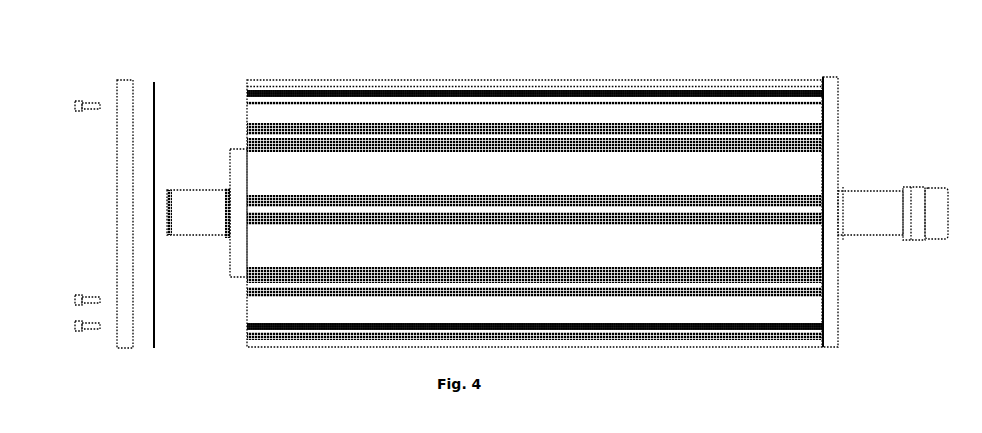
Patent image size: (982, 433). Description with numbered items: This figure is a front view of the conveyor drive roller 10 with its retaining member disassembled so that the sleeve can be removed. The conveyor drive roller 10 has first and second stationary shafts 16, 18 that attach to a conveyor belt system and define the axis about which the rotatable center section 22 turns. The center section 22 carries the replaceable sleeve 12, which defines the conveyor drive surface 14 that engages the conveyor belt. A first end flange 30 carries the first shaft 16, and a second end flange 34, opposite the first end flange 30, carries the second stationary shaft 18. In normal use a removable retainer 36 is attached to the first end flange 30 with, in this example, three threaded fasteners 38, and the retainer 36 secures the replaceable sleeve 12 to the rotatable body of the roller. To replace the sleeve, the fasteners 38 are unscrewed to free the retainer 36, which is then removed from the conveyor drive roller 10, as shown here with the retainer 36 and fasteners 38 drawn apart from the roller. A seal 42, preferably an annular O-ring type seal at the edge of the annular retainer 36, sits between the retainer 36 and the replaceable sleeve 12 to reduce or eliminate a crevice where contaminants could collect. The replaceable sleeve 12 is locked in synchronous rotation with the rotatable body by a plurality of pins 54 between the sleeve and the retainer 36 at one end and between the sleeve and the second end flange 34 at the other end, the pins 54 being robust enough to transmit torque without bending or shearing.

The conveyor drive roller 10 is at (445, 44).
The replaceable sleeve 12 is at (292, 348).
The conveyor drive surface 14 is at (490, 257).
The first stationary shaft 16 is at (203, 228).
The second stationary shaft 18 is at (885, 226).
The rotatable center section 22 is at (389, 367).
The first end flange 30 is at (229, 155).
The second end flange 34 is at (832, 140).
The removable retainer 36 is at (120, 78).
The fasteners 38 is at (87, 113).
The seal 42 is at (156, 100).
The pins 54 is at (247, 104).